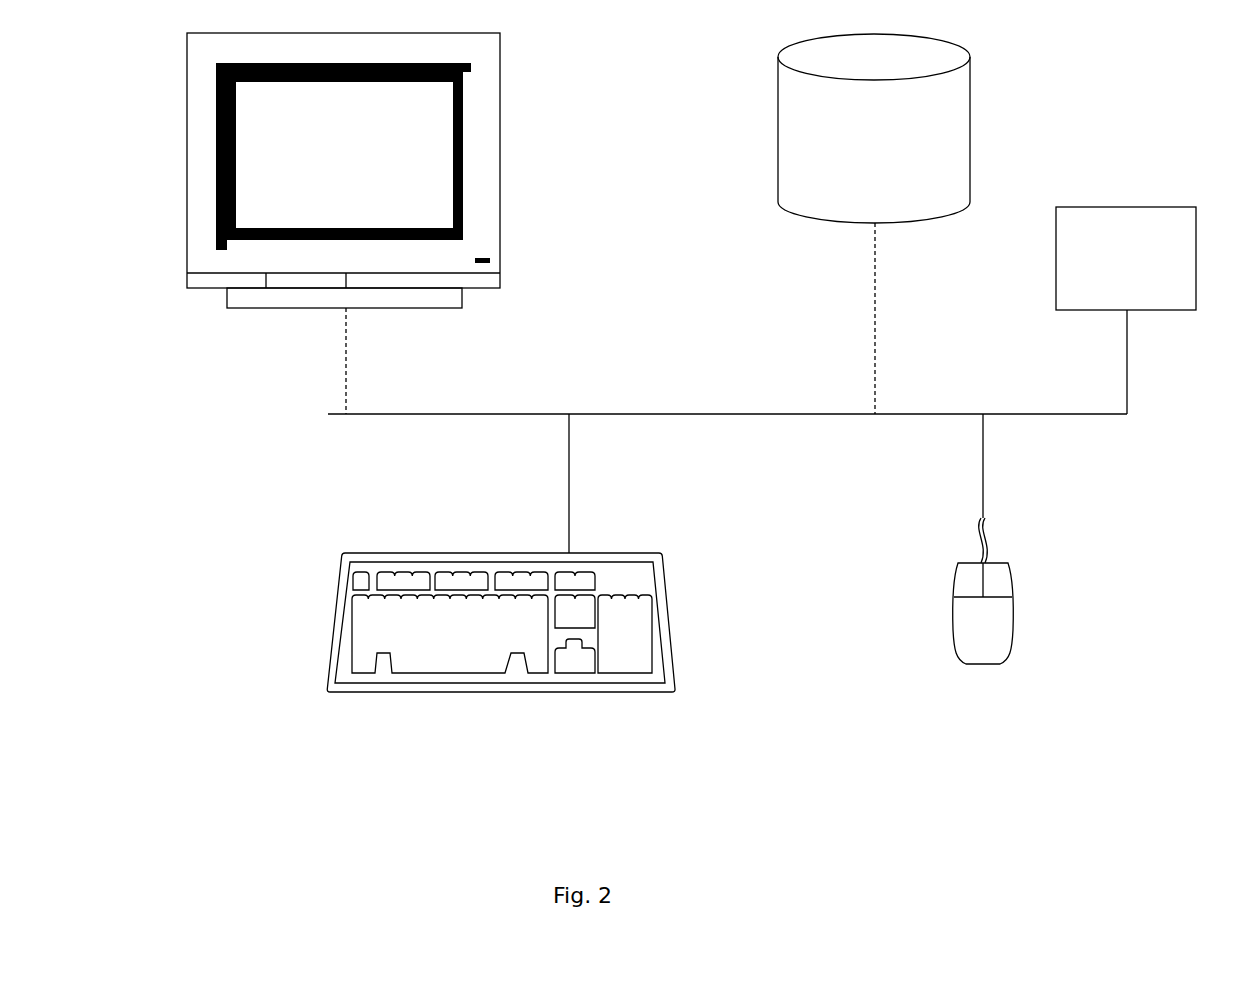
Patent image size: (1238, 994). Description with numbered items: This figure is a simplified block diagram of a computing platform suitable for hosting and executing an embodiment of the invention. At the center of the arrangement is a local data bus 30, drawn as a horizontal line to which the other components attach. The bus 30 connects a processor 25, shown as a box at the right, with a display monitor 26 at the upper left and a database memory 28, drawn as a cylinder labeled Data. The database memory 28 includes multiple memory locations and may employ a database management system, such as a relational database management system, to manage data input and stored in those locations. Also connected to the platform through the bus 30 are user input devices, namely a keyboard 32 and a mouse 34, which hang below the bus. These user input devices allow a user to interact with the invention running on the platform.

The processor 25 is at (1127, 207).
The display monitor 26 is at (500, 120).
The database memory 28 is at (970, 100).
The local data bus 30 is at (638, 414).
The keyboard 32 is at (675, 622).
The mouse 34 is at (1018, 570).